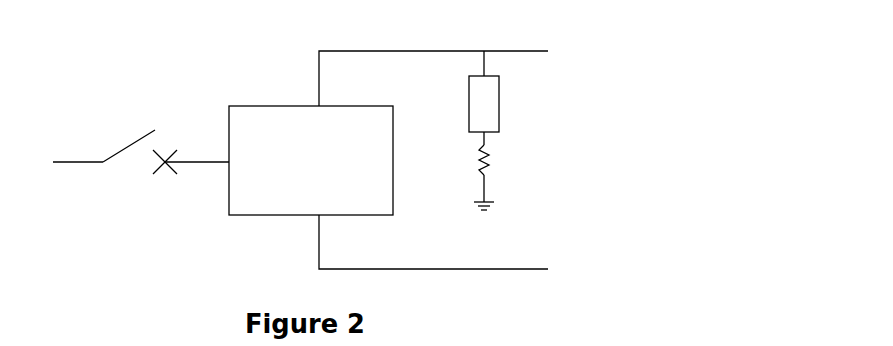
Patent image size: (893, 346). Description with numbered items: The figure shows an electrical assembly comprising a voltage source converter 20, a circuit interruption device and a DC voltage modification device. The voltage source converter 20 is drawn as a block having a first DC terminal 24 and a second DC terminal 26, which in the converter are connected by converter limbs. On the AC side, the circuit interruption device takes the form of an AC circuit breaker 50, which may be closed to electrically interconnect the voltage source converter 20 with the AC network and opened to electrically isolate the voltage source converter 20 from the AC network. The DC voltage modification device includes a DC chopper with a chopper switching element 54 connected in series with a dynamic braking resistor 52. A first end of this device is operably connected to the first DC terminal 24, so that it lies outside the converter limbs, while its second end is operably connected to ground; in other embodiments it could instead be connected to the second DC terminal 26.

The voltage source converter 20 is at (304, 178).
The first DC terminal 24 is at (312, 102).
The second DC terminal 26 is at (310, 222).
The AC circuit breaker 50 is at (141, 135).
The dynamic braking resistor 52 is at (498, 171).
The chopper switching element 54 is at (503, 91).